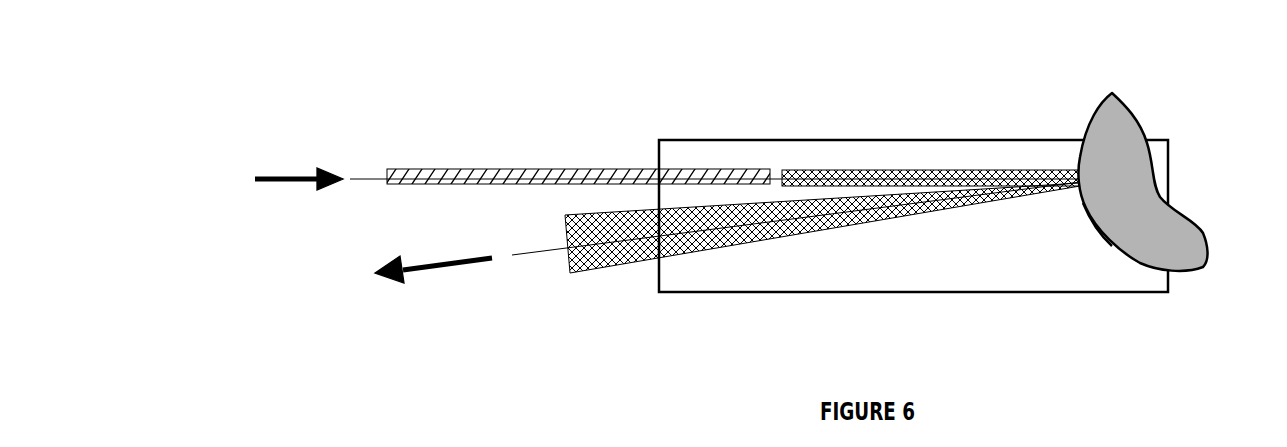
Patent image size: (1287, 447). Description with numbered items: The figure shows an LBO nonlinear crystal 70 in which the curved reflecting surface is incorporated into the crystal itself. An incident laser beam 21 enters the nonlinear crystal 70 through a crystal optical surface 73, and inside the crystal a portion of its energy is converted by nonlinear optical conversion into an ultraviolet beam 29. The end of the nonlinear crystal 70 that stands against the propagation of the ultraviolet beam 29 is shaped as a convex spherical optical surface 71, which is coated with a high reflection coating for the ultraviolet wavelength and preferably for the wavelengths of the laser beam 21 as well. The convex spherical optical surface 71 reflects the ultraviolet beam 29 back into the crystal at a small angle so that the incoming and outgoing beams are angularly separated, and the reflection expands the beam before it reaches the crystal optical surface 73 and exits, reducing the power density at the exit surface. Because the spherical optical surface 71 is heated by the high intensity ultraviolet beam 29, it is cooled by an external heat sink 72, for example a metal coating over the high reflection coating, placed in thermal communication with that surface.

The incident laser beam 21 is at (505, 168).
The ultraviolet beam 29 is at (840, 223).
The nonlinear crystal 70 is at (891, 140).
The convex spherical optical surface 71 is at (1092, 205).
The external heat sink 72 is at (1152, 143).
The crystal optical surface 73 is at (658, 283).